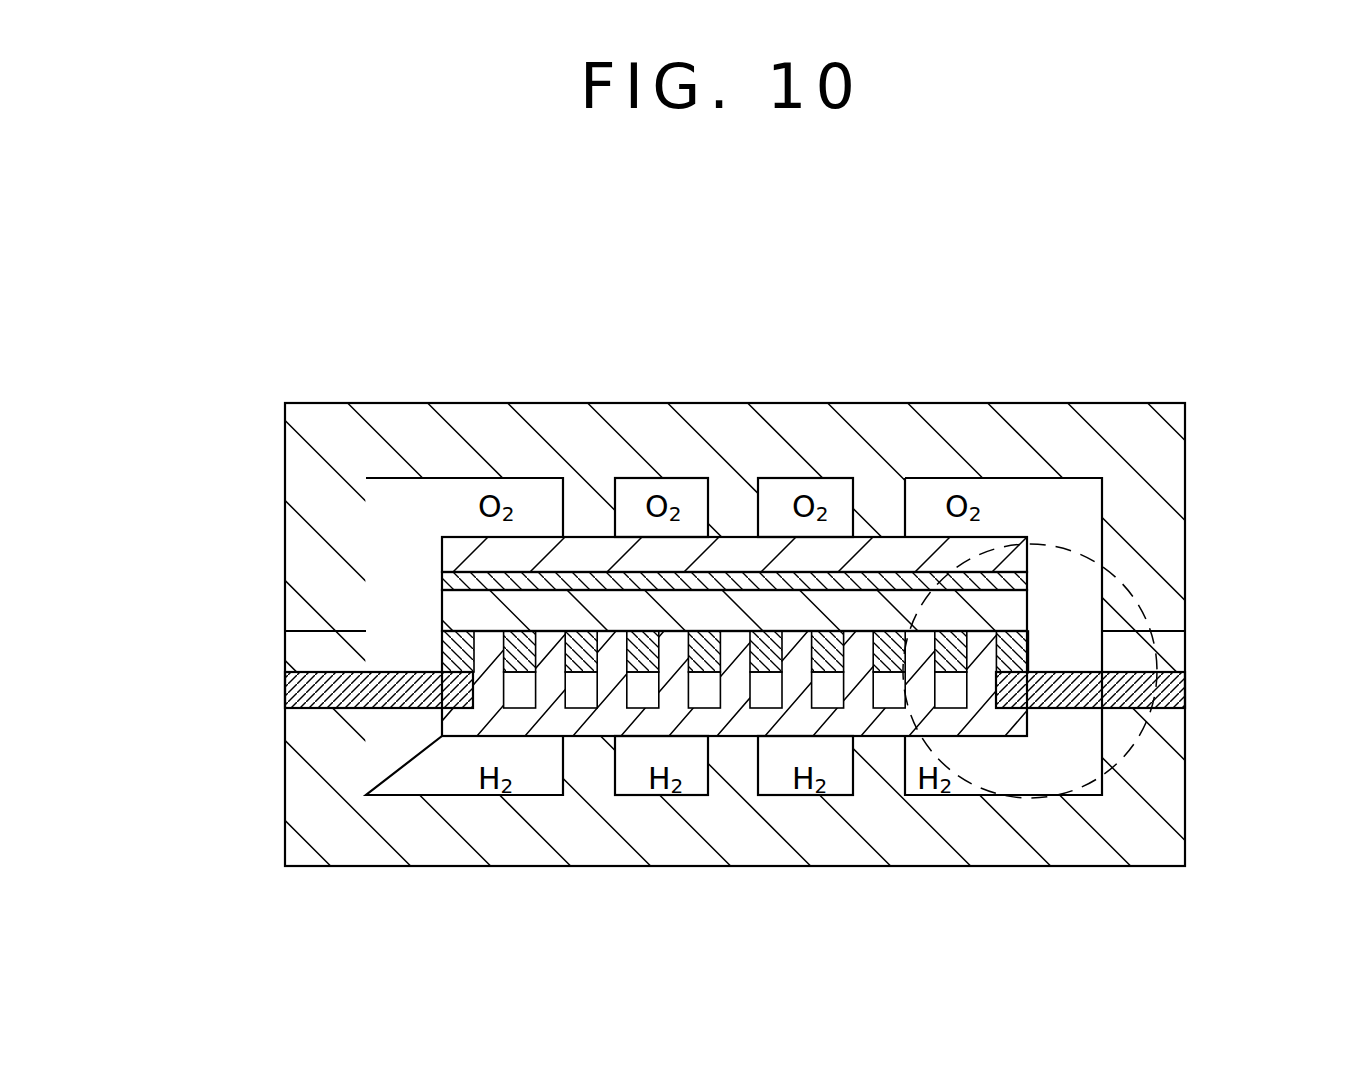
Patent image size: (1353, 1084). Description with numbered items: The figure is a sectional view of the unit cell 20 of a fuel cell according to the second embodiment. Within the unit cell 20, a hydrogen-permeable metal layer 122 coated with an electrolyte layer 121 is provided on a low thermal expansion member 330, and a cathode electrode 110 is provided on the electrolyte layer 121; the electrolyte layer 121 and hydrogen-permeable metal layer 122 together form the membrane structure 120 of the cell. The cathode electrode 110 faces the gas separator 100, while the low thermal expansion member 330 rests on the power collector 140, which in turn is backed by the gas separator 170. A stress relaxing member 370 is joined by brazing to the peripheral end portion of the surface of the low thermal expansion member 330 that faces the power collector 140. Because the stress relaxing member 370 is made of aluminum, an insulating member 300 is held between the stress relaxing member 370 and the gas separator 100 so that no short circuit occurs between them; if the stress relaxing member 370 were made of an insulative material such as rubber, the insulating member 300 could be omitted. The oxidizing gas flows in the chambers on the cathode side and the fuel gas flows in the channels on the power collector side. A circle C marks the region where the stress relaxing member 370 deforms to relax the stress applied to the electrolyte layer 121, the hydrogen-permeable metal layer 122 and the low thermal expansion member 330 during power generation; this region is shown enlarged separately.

The unit cell 20 is at (1025, 311).
The gas separator 100 is at (1185, 547).
The cathode electrode 110 is at (600, 550).
The membrane electrode assembly 120 is at (579, 548).
The electrolyte layer 121 is at (455, 580).
The hydrogen-permeable metal layer 122 is at (448, 607).
The power collector 140 is at (605, 722).
The gas separator 170 is at (1163, 800).
The insulating member 300 is at (325, 655).
The low thermal expansion member 330 is at (447, 643).
The stress relaxing member 370 is at (302, 688).
The circle C is at (1033, 800).